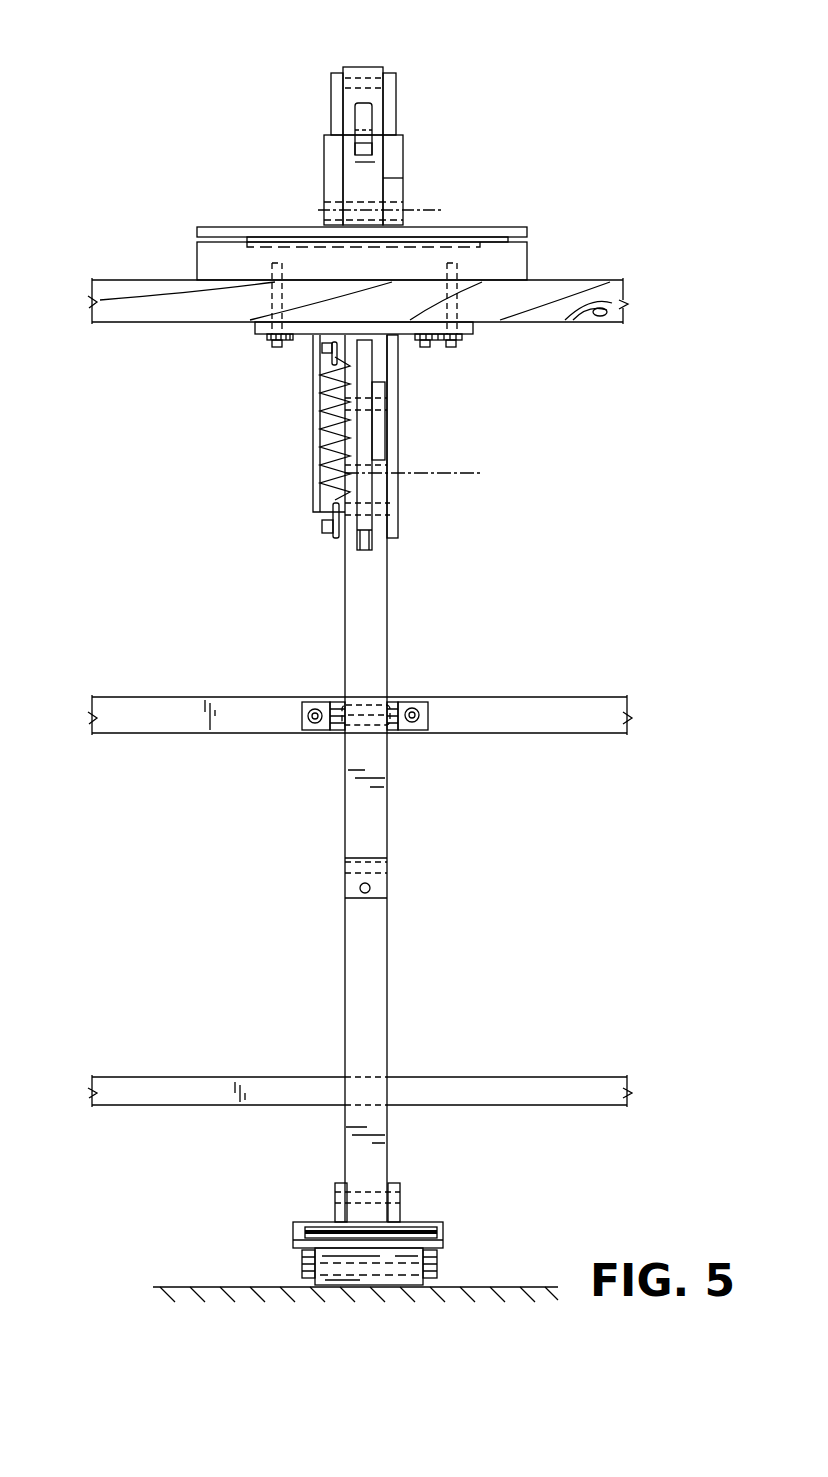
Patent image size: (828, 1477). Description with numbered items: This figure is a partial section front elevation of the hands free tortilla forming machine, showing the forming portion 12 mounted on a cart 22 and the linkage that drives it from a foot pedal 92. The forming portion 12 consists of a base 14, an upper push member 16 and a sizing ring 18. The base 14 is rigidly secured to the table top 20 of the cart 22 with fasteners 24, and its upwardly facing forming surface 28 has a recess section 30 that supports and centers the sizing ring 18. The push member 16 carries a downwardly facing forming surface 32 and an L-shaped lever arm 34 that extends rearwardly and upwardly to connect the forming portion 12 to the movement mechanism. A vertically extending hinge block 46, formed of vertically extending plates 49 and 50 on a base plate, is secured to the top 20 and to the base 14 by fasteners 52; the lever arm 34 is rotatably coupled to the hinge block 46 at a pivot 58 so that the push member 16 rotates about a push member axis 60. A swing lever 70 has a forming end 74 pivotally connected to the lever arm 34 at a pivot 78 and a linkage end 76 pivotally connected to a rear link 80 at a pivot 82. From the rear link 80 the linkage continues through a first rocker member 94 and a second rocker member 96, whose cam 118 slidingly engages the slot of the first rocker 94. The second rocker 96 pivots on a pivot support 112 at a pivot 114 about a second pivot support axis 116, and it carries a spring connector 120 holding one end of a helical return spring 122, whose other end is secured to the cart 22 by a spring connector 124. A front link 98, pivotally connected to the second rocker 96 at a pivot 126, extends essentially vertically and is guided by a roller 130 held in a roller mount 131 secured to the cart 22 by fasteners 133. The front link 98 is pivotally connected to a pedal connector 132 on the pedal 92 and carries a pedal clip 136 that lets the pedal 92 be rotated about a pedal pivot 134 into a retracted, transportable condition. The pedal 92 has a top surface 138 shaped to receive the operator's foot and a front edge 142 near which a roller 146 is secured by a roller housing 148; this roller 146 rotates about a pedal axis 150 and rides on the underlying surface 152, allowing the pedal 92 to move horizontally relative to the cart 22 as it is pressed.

The forming portion 12 is at (228, 183).
The base 14 is at (533, 262).
The upper push member 16 is at (214, 221).
The sizing ring 18 is at (470, 237).
The table top 20 is at (626, 292).
The cart 22 is at (583, 691).
The fasteners 24 is at (273, 338).
The forming surface 28 is at (206, 240).
The recess section 30 is at (307, 246).
The forming surface 32 is at (513, 237).
The lever arm 34 is at (375, 170).
The hinge block 46 is at (409, 139).
The vertically extending plate 49 is at (333, 147).
The vertically extending plate 50 is at (397, 178).
The fasteners 52 is at (292, 346).
The pivot 58 is at (337, 203).
The push member axis 60 is at (433, 210).
The swing lever 70 is at (380, 94).
The forming end 74 is at (365, 137).
The linkage end 76 is at (371, 67).
The pivot 78 is at (380, 125).
The rear link 80 is at (330, 96).
The pivot 82 is at (358, 78).
The pedal 92 is at (450, 1231).
The first rocker member 94 is at (375, 370).
The second rocker member 96 is at (384, 438).
The front link 98 is at (388, 613).
The pivot support 112 is at (317, 436).
The pivot 114 is at (376, 478).
The second pivot support axis 116 is at (467, 473).
The cam 118 is at (380, 402).
The spring connector 120 is at (323, 527).
The return spring 122 is at (320, 452).
The spring connector 124 is at (330, 352).
The pivot 126 is at (383, 506).
The roller 130 is at (372, 726).
The roller mount 131 is at (430, 705).
The pedal connector 132 is at (396, 1212).
The fasteners 133 is at (316, 710).
The pedal pivot 134 is at (396, 1195).
The pedal clip 136 is at (380, 868).
The top surface 138 is at (318, 1233).
The front edge 142 is at (312, 1241).
The roller 146 is at (345, 1280).
The roller housing 148 is at (437, 1258).
The pedal axis 150 is at (385, 1272).
The underlying surface 152 is at (198, 1287).